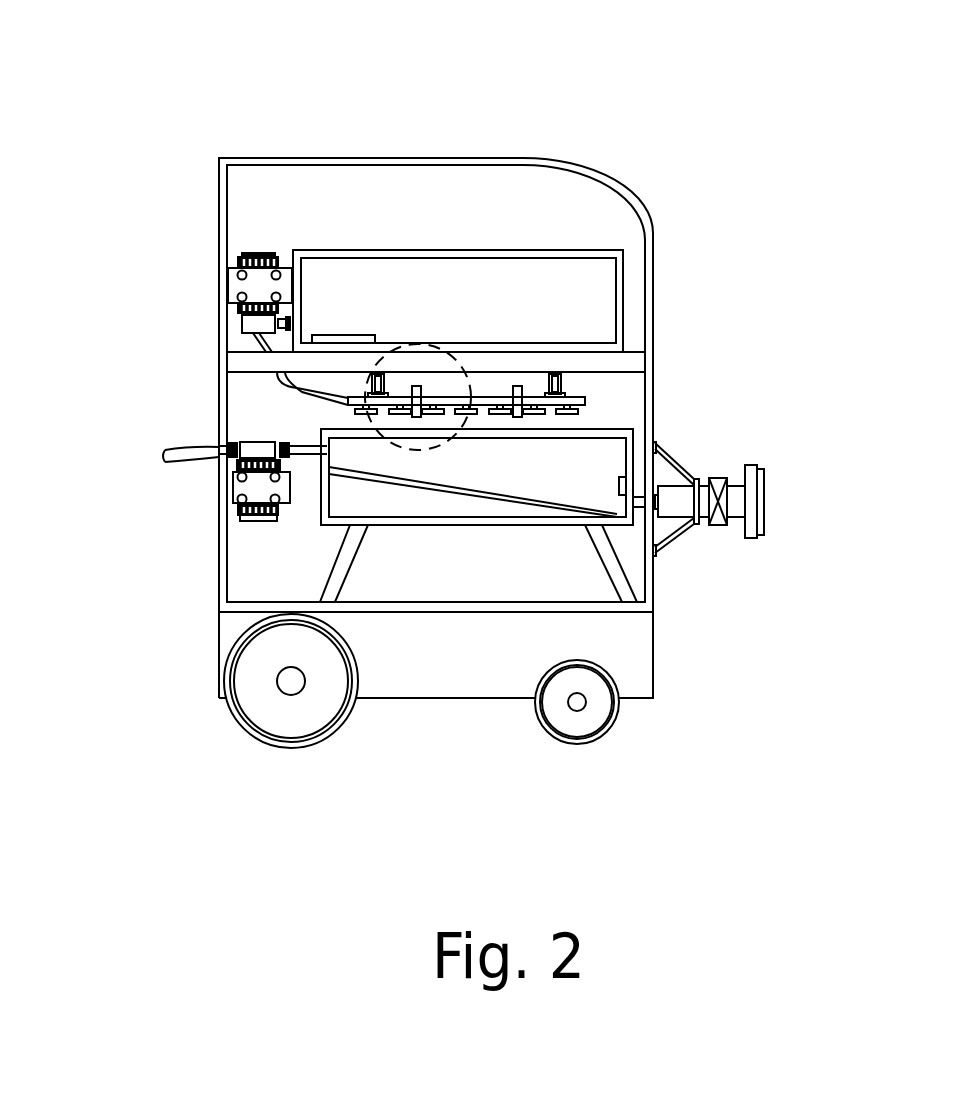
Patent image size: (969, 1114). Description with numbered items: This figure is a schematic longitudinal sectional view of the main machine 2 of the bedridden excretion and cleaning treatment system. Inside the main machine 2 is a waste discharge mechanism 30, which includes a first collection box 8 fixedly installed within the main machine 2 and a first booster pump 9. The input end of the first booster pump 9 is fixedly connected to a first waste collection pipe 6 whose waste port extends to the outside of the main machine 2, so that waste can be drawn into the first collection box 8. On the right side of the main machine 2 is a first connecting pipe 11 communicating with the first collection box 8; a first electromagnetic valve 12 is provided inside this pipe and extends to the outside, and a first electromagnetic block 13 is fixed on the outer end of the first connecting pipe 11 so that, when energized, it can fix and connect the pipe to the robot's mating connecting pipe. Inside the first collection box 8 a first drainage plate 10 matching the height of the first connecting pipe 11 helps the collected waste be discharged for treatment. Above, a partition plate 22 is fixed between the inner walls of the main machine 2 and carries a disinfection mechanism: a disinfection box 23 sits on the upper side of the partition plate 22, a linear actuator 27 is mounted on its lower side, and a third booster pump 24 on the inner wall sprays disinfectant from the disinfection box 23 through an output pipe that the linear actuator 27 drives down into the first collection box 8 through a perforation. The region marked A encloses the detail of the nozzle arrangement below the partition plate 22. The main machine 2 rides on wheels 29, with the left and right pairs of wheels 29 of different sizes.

The main machine 2 is at (630, 645).
The first waste collection pipe 6 is at (212, 453).
The first collection box 8 is at (324, 509).
The first booster pump 9 is at (230, 515).
The first drainage plate 10 is at (552, 505).
The first connecting pipe 11 is at (678, 517).
The first electromagnetic valve 12 is at (717, 478).
The first electromagnetic block 13 is at (764, 509).
The partition plate 22 is at (640, 368).
The disinfection box 23 is at (472, 250).
The third booster pump 24 is at (265, 290).
The linear actuator 27 is at (557, 380).
The wheel 29 is at (273, 717).
The waste discharge mechanism 30 is at (147, 550).
The detail region A is at (410, 346).